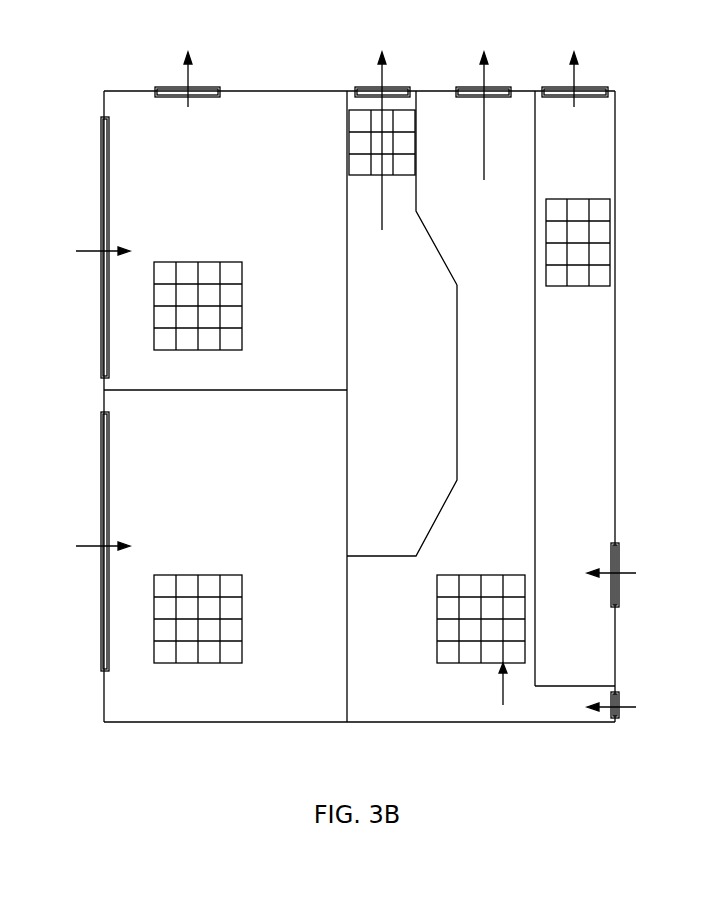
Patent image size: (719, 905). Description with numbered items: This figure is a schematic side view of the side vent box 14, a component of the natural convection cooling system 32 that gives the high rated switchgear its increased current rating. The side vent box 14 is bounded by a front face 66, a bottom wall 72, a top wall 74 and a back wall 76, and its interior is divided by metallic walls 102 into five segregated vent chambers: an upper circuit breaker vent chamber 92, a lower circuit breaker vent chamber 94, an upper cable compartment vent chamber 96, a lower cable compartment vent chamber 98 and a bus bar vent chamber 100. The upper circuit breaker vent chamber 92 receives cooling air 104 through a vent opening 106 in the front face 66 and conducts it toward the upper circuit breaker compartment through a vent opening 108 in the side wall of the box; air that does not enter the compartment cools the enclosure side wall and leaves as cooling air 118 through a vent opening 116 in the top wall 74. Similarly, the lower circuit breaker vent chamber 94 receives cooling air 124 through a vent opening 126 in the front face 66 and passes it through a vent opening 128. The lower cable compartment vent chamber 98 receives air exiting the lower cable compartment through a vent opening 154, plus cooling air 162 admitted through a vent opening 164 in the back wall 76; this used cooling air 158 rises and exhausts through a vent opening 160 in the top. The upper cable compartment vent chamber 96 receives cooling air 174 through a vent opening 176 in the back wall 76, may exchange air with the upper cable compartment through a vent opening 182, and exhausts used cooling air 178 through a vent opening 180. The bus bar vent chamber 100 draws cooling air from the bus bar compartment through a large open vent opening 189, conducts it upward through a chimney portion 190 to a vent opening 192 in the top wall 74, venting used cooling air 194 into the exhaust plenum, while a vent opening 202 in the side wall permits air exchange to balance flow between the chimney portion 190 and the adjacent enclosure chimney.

The side vent box 14 is at (637, 71).
The cooling system 32 is at (77, 762).
The front face 66 is at (104, 390).
The bottom wall 72 is at (372, 722).
The top wall 74 is at (264, 90).
The back wall 76 is at (615, 333).
The upper circuit breaker vent chamber 92 is at (174, 240).
The lower circuit breaker vent chamber 94 is at (174, 556).
The upper cable compartment vent chamber 96 is at (575, 576).
The lower cable compartment vent chamber 98 is at (497, 480).
The bus bar vent chamber 100 is at (385, 406).
The walls 102 is at (347, 334).
The cooling air 104 is at (76, 250).
The vent opening 106 is at (100, 170).
The vent opening 108 is at (184, 262).
The vent opening 116 is at (161, 87).
The cooling air 118 is at (194, 69).
The cooling air 124 is at (76, 546).
The vent opening 126 is at (100, 598).
The vent opening 128 is at (184, 575).
The vent opening 154 is at (472, 575).
The used cooling air 158 is at (488, 69).
The vent opening 160 is at (464, 87).
The cooling air 162 is at (638, 707).
The vent opening 164 is at (620, 719).
The cooling air 174 is at (638, 573).
The vent opening 176 is at (620, 593).
The used cooling air 178 is at (580, 69).
The vent opening 180 is at (548, 87).
The vent opening 182 is at (584, 199).
The vent opening 189 is at (458, 401).
The chimney portion 190 is at (417, 196).
The vent opening 192 is at (363, 87).
The used cooling air 194 is at (388, 69).
The vent opening 202 is at (349, 140).